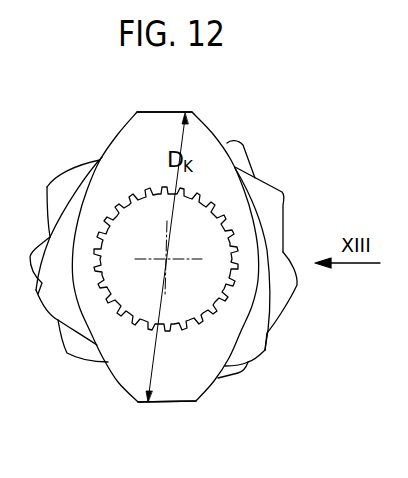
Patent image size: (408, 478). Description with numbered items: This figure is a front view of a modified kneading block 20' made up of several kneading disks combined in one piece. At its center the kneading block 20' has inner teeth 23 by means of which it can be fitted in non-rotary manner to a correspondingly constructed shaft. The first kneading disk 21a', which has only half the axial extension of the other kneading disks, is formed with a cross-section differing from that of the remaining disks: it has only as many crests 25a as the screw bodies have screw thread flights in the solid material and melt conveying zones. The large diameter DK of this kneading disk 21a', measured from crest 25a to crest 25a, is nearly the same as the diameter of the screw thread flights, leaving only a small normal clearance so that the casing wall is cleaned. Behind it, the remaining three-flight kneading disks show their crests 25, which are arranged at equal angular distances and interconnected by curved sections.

The kneading block 20' is at (183, 236).
The crests 25a is at (162, 111).
The crests 25 is at (47, 187).
The inner teeth 23 is at (152, 326).
The first kneading disk 21a' is at (229, 314).